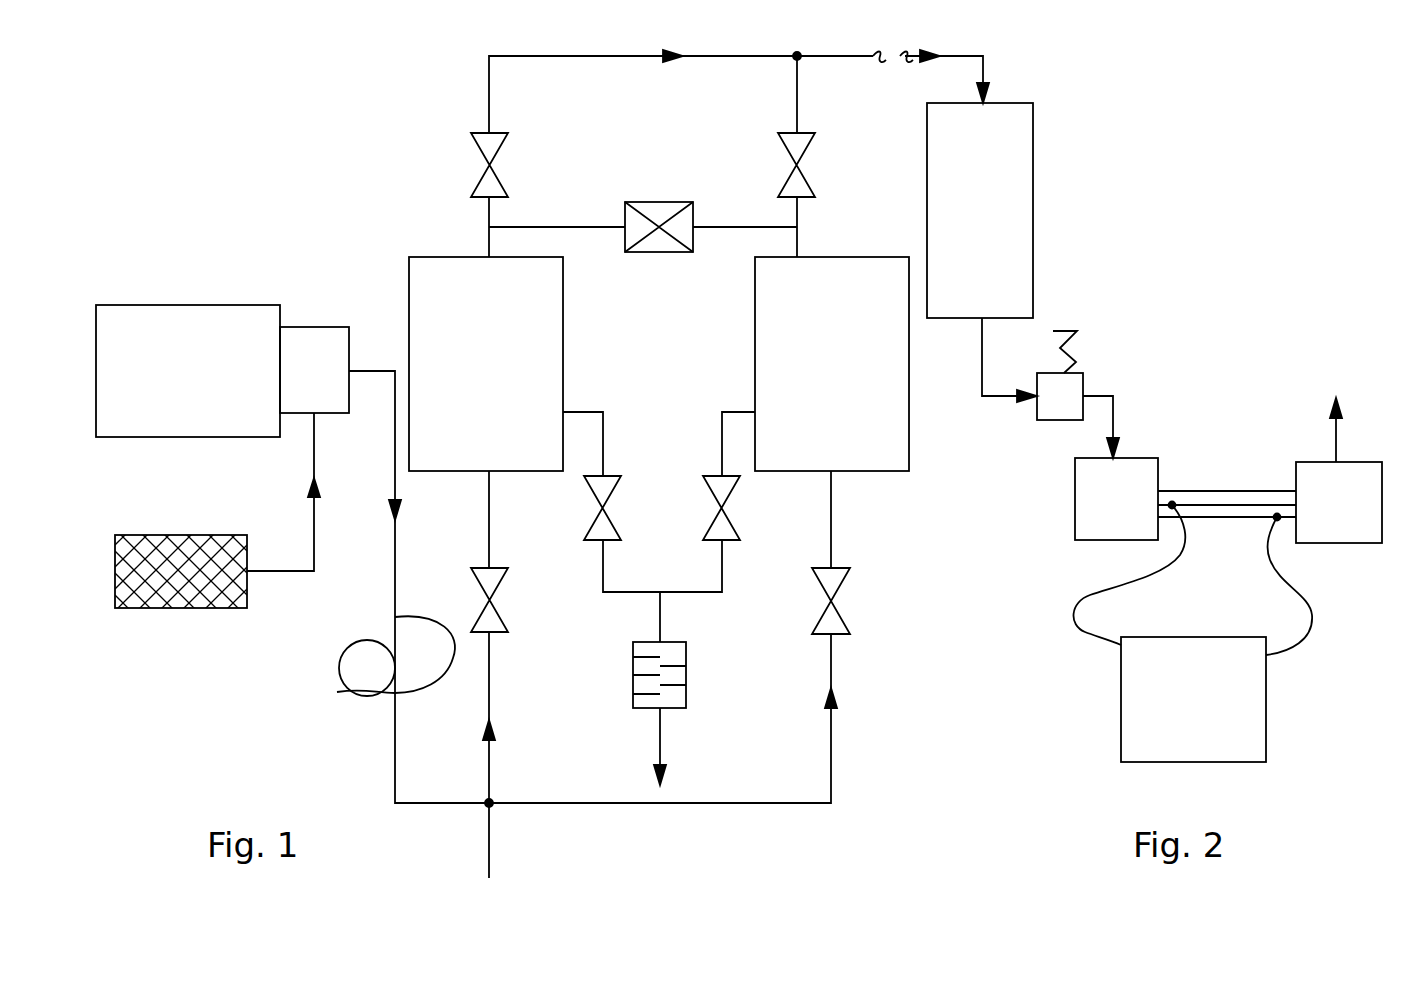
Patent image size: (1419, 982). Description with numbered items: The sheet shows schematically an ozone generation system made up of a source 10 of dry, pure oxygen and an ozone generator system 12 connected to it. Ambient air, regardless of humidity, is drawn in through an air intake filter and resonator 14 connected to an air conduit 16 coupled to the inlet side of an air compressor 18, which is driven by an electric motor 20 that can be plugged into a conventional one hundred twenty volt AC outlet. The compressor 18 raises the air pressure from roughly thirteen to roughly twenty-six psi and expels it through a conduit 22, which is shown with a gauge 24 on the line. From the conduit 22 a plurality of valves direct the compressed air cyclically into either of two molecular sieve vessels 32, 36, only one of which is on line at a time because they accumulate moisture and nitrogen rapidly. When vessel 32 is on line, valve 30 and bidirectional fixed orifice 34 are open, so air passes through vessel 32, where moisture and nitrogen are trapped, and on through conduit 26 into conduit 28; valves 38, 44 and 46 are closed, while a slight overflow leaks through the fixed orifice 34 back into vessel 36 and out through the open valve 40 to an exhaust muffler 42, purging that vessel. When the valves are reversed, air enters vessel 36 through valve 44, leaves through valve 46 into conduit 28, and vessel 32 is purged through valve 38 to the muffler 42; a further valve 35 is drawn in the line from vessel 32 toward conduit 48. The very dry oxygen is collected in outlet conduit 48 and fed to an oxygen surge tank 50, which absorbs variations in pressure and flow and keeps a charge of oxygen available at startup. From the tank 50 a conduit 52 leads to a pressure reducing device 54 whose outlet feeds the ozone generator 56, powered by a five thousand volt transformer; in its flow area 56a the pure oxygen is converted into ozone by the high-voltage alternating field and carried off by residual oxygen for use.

In FIG. 1, the source of dry, pure oxygen 10 is at (362, 144).
In FIG. 2, the ozone generator system 12 is at (1220, 210).
In FIG. 1, the air intake filter and resonator 14 is at (116, 536).
In FIG. 1, the air conduit 16 is at (283, 569).
In FIG. 1, the air compressor 18 is at (300, 327).
In FIG. 1, the electric motor 20 is at (144, 305).
In FIG. 1, the conduit 22 is at (395, 475).
In FIG. 1, the pressure gauge 24 is at (396, 656).
In FIG. 1, the conduit 26 is at (489, 768).
In FIG. 1, the conduit 28 is at (767, 805).
In FIG. 1, the valve 30 is at (497, 633).
In FIG. 1, the molecular sieve vessel 32 is at (563, 349).
In FIG. 1, the bidirectional fixed orifice 34 is at (658, 252).
In FIG. 1, the outlet valve 35 is at (471, 145).
In FIG. 1, the molecular sieve vessel 36 is at (755, 380).
In FIG. 1, the valve 38 is at (590, 541).
In FIG. 1, the valve 40 is at (730, 540).
In FIG. 1, the exhaust muffler 42 is at (686, 675).
In FIG. 1, the valve 44 is at (850, 573).
In FIG. 1, the valve 46 is at (778, 145).
In FIG. 1, the outlet conduit 48 is at (818, 58).
In FIG. 1, the oxygen surge tank 50 is at (1033, 140).
In FIG. 1, the conduit 52 is at (1002, 400).
In FIG. 1, the pressure reducing device 54 is at (1058, 420).
In FIG. 2, the ozone generator 56 is at (1150, 456).
In FIG. 2, the flow area 56a is at (1245, 490).